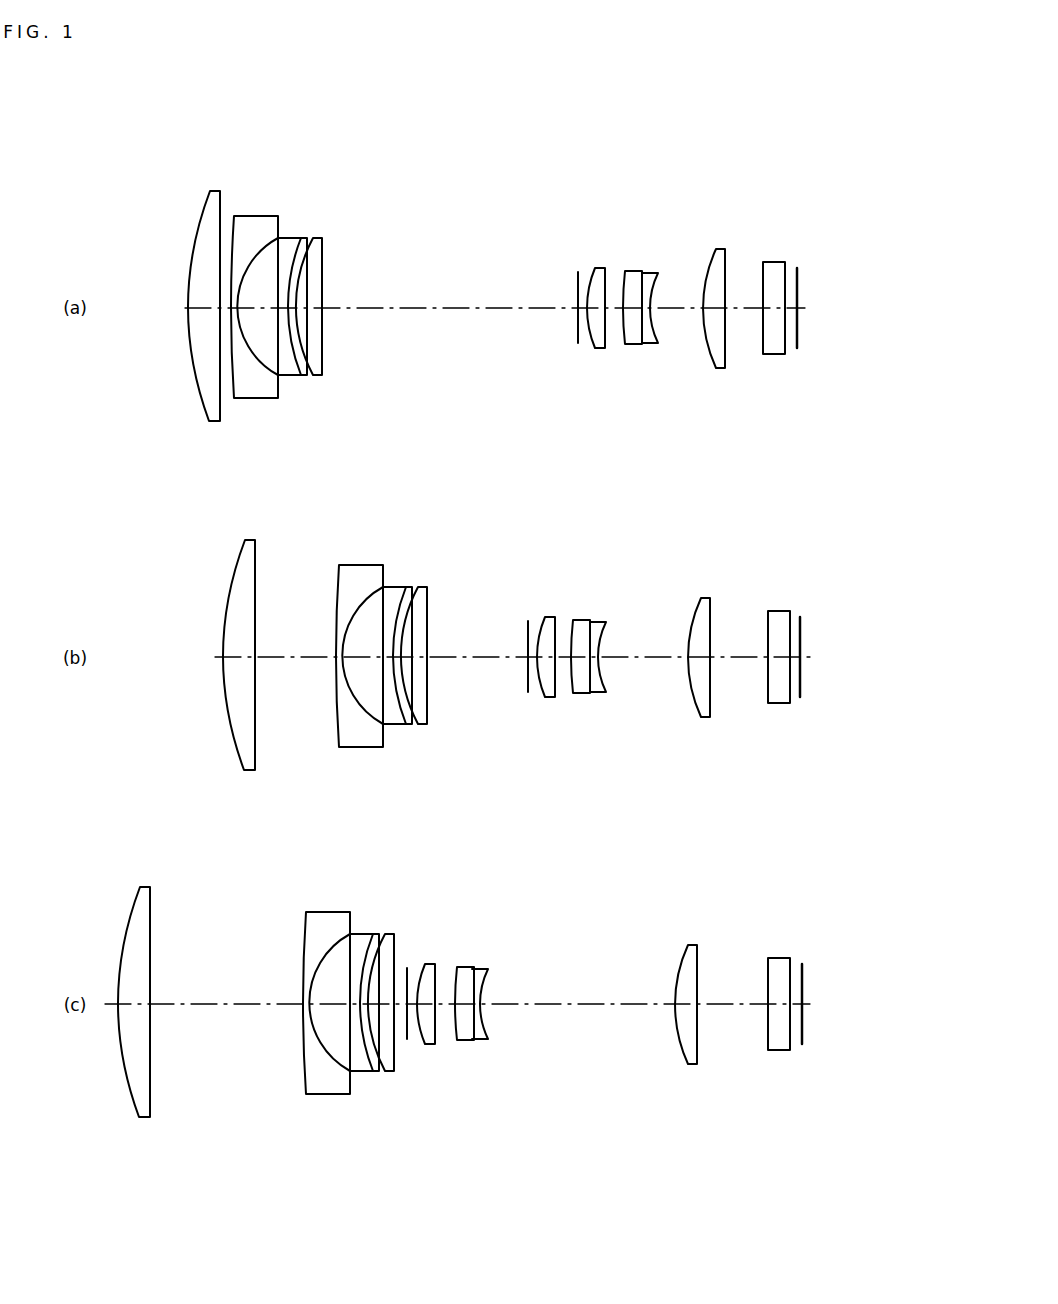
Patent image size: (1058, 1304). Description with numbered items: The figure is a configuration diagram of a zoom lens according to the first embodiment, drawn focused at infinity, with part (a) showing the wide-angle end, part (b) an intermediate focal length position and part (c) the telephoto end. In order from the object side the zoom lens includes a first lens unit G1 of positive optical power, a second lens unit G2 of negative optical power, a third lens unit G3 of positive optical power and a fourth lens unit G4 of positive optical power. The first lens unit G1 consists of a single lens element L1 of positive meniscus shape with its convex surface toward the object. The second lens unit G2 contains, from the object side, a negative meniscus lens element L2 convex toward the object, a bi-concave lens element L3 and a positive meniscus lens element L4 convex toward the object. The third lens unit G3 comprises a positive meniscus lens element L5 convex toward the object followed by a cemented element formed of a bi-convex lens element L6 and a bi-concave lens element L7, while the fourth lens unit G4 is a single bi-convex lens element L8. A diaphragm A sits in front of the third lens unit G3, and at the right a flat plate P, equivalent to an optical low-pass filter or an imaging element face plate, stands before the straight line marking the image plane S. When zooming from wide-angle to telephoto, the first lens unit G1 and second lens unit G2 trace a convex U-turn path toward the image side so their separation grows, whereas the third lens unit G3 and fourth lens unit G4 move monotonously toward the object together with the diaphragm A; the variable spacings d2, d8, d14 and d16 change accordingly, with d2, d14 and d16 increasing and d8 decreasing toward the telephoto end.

The first lens unit G1 is at (210, 150).
The second lens unit G2 is at (240, 150).
The third lens unit G3 is at (578, 150).
The fourth lens unit G4 is at (692, 150).
The lens element L1 is at (214, 213).
The lens element L2 is at (269, 228).
The lens element L3 is at (288, 240).
The lens element L4 is at (322, 238).
The lens element L5 is at (603, 268).
The lens element L6 is at (639, 270).
The lens element L7 is at (652, 273).
The lens element L8 is at (722, 248).
The diaphragm A is at (582, 270).
The flat plate P is at (770, 272).
The image plane S is at (797, 267).
The distance between surfaces d2 is at (232, 308).
The distance between surfaces d8 is at (425, 308).
The distance between surfaces d14 is at (685, 308).
The distance between surfaces d16 is at (750, 308).